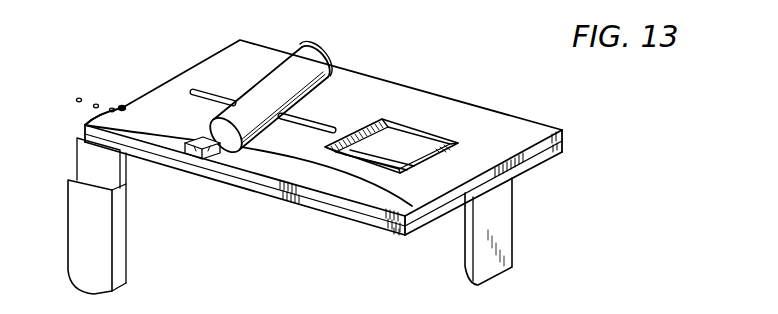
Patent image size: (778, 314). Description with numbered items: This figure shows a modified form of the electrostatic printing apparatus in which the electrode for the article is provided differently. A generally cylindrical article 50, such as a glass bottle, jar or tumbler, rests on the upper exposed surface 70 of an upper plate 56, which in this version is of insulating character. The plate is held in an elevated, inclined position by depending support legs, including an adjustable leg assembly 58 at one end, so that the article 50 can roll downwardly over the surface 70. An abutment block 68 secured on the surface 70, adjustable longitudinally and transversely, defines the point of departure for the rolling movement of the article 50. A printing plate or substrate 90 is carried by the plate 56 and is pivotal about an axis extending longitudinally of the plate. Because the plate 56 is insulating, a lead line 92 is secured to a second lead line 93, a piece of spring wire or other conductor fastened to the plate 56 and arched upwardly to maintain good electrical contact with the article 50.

The article 50 is at (328, 51).
The upper plate 56 is at (243, 50).
The adjustable leg assembly 58 is at (64, 197).
The abutment block 68 is at (203, 142).
The upper exposed surface 70 is at (406, 57).
The printing plate or substrate 90 is at (401, 138).
The lead line 92 is at (73, 99).
The second lead line 93 is at (127, 110).